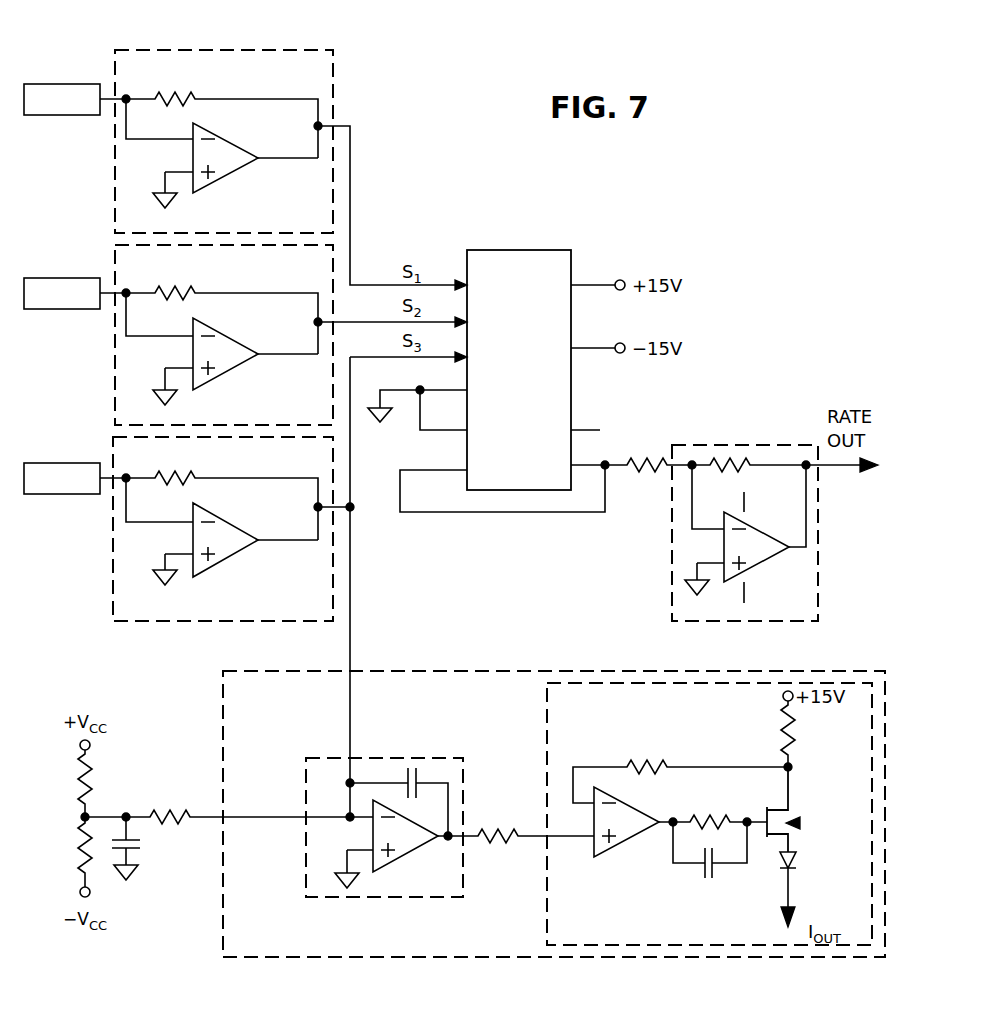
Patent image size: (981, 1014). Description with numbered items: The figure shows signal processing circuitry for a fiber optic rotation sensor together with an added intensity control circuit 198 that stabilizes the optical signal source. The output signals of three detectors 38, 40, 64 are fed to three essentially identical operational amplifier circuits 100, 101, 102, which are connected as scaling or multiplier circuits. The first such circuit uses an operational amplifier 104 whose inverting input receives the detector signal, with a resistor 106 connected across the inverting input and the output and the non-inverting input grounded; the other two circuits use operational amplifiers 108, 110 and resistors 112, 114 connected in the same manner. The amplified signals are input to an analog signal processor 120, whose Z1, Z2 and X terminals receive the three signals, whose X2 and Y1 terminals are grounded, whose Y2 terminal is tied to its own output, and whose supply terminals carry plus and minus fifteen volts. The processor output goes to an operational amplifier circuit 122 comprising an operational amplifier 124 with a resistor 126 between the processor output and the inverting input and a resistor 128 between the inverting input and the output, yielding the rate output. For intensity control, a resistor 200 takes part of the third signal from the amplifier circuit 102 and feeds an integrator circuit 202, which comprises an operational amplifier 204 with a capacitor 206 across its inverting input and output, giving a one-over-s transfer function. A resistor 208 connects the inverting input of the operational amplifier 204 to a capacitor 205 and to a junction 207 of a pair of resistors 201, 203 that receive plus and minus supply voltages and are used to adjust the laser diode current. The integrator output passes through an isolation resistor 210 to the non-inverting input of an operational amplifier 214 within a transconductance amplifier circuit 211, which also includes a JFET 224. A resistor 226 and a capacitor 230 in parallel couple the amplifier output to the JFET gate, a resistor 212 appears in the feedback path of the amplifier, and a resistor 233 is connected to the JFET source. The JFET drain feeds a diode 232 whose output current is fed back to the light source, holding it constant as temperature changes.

The detector 38 is at (50, 84).
The detector 40 is at (50, 278).
The detector 64 is at (50, 463).
The operational amplifier circuit 100 is at (335, 75).
The operational amplifier circuit 101 is at (352, 272).
The operational amplifier circuit 102 is at (350, 545).
The operational amplifier 104 is at (232, 140).
The resistor 106 is at (176, 95).
The operational amplifier 108 is at (226, 338).
The operational amplifier 110 is at (230, 522).
The resistor 112 is at (185, 288).
The resistor 114 is at (184, 473).
The analog signal processor 120 is at (527, 250).
The operational amplifier circuit 122 is at (671, 561).
The operational amplifier 124 is at (755, 568).
The resistor 126 is at (633, 460).
The resistor 128 is at (735, 460).
The intensity control circuit 198 is at (532, 671).
The resistor 200 is at (360, 605).
The resistor 201 is at (80, 778).
The integrator circuit 202 is at (306, 850).
The resistor 203 is at (80, 846).
The operational amplifier 204 is at (395, 860).
The capacitor 205 is at (140, 845).
The capacitor 206 is at (415, 776).
The junction 207 is at (81, 816).
The resistor 208 is at (182, 812).
The isolation resistor 210 is at (490, 838).
The transconductance amplifier circuit 211 is at (547, 705).
The feedback resistor 212 is at (650, 764).
The operational amplifier 214 is at (620, 847).
The JFET 224 is at (802, 823).
The resistor 226 is at (713, 818).
The capacitor 230 is at (718, 868).
The diode 232 is at (795, 860).
The resistor 233 is at (783, 725).